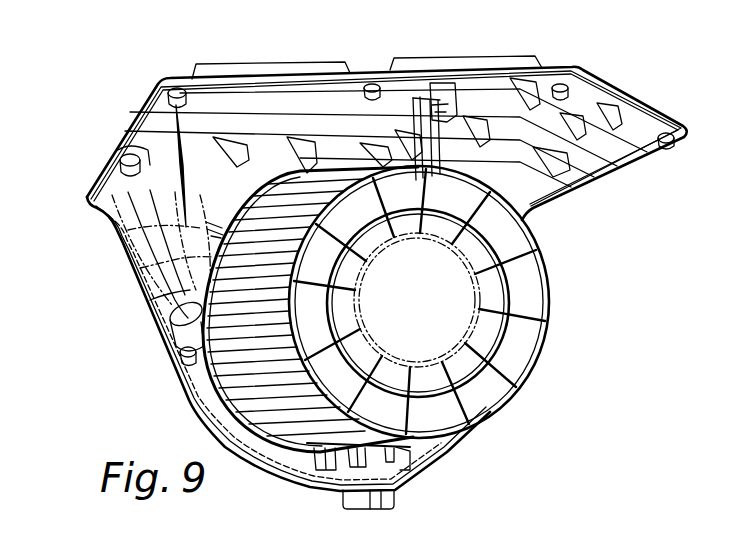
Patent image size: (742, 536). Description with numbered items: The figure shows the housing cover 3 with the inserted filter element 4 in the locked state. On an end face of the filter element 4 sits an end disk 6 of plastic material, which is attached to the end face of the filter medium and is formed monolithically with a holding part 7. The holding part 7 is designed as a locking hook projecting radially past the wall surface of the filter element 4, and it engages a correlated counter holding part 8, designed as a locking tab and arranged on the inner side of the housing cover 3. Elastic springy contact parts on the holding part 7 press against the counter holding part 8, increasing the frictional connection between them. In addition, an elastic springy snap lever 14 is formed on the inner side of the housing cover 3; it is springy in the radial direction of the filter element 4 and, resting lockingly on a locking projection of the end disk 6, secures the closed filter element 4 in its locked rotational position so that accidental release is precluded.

The housing cover 3 is at (153, 281).
The filter element 4 is at (545, 348).
The end disk 6 is at (488, 392).
The holding part 7 is at (430, 145).
The counter holding part 8 is at (443, 90).
The snap lever 14 is at (403, 468).